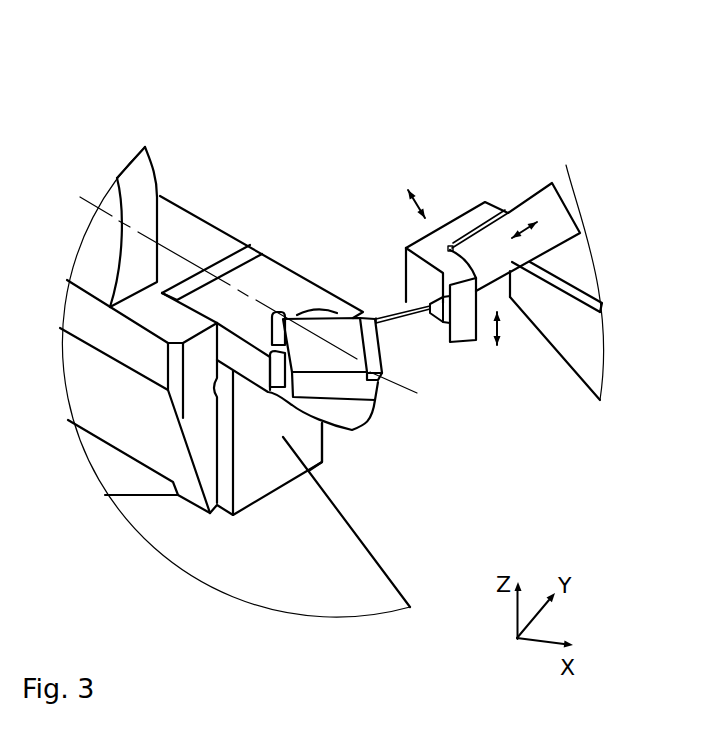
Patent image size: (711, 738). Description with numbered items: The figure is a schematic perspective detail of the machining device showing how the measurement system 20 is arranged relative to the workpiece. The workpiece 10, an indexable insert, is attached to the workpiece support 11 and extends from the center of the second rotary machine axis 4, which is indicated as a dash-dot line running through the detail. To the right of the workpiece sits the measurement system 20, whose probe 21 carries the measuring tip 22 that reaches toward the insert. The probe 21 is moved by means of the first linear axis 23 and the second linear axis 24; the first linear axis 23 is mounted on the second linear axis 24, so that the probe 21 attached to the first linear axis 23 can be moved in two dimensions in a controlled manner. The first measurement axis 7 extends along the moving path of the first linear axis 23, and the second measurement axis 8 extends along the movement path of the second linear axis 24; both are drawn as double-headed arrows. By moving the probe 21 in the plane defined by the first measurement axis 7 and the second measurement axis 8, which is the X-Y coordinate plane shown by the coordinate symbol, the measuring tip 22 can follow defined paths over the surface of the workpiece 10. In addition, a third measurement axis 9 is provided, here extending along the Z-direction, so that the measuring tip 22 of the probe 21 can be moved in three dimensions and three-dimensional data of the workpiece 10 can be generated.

The second rotary machine axis 4 is at (78, 197).
The first measurement axis 7 is at (528, 226).
The second measurement axis 8 is at (420, 198).
The third measurement axis 9 is at (500, 324).
The workpiece 10 is at (370, 392).
The workpiece support 11 is at (288, 296).
The measurement system 20 is at (546, 424).
The probe 21 is at (383, 327).
The measuring tip 22 is at (430, 323).
The first linear axis 23 is at (573, 232).
The second linear axis 24 is at (567, 283).